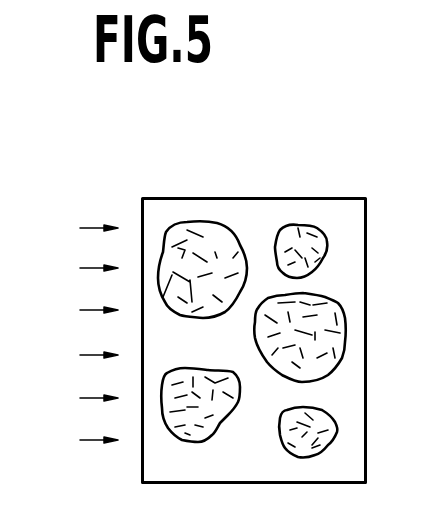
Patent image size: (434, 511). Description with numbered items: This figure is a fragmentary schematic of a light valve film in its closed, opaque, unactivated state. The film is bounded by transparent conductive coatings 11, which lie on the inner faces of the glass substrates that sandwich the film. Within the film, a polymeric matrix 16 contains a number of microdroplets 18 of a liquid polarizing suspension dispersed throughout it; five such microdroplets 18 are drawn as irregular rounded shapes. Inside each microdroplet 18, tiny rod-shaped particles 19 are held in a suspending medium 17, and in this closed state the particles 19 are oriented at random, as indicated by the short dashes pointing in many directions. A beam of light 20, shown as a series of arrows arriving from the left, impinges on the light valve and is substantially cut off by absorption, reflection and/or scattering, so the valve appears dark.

The transparent conductive coating 11 is at (142, 227).
The polymeric matrix 16 is at (163, 222).
The suspending medium 17 is at (338, 331).
The microdroplet 18 is at (215, 223).
The rod-shaped particle 19 is at (222, 247).
The beam of light 20 is at (81, 334).